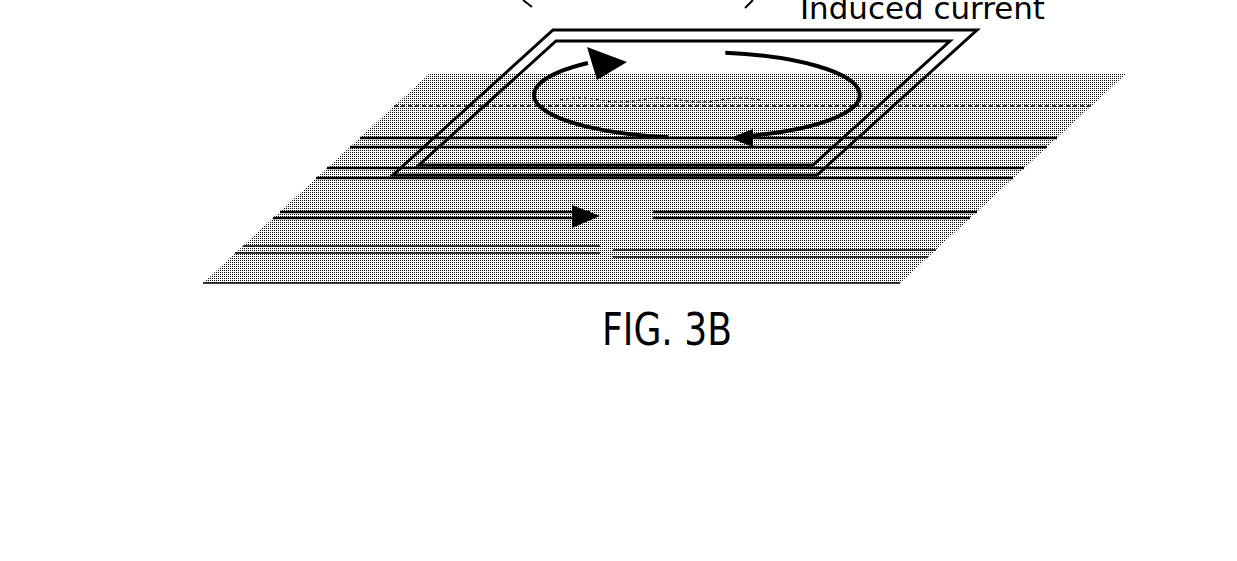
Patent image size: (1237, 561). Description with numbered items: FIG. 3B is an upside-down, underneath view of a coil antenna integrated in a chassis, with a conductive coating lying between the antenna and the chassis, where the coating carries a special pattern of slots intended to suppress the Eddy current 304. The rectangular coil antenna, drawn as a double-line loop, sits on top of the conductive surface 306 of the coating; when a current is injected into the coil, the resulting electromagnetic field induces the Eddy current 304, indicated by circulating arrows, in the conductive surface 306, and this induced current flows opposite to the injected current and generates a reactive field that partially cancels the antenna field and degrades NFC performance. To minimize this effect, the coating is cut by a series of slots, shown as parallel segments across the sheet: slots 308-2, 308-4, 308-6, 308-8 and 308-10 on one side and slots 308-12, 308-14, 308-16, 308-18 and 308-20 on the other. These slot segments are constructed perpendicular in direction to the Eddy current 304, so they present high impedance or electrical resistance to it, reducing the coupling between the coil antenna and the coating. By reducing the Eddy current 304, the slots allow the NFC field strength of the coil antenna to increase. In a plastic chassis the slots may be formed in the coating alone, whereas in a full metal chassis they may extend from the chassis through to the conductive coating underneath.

The Eddy current 304 is at (348, 281).
The conductive surface 306 is at (784, 284).
The slot 308-2 is at (388, 97).
The slot 308-4 is at (362, 137).
The slot 308-6 is at (322, 173).
The slot 308-8 is at (282, 212).
The slot 308-10 is at (242, 248).
The slot 308-12 is at (1093, 110).
The slot 308-14 is at (1057, 140).
The slot 308-16 is at (1018, 183).
The slot 308-18 is at (982, 220).
The slot 308-20 is at (930, 257).